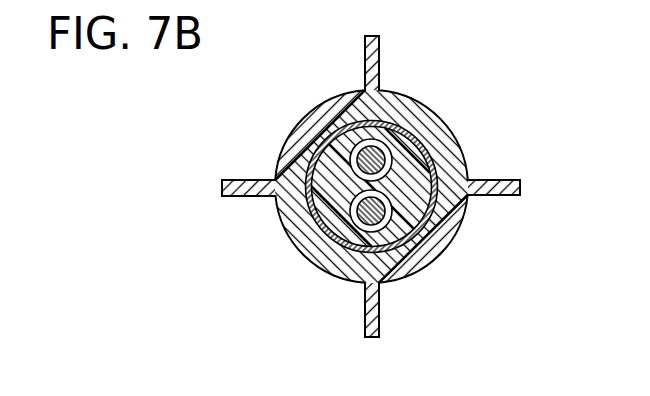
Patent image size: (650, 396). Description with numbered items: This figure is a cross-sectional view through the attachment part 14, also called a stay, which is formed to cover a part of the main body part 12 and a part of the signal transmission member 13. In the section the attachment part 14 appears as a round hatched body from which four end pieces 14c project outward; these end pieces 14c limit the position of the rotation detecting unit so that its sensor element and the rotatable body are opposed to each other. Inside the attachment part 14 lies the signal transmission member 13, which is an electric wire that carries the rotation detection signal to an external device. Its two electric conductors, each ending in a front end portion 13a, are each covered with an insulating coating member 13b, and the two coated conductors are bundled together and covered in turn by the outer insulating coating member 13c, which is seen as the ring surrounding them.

The main body part 12 is at (415, 234).
The signal transmission member 13 is at (415, 234).
The front end portion 13a is at (388, 223).
The insulating coating member 13b is at (410, 215).
The insulating coating member 13c is at (433, 212).
The attachment part 14 is at (320, 117).
The end pieces 14c is at (498, 184).